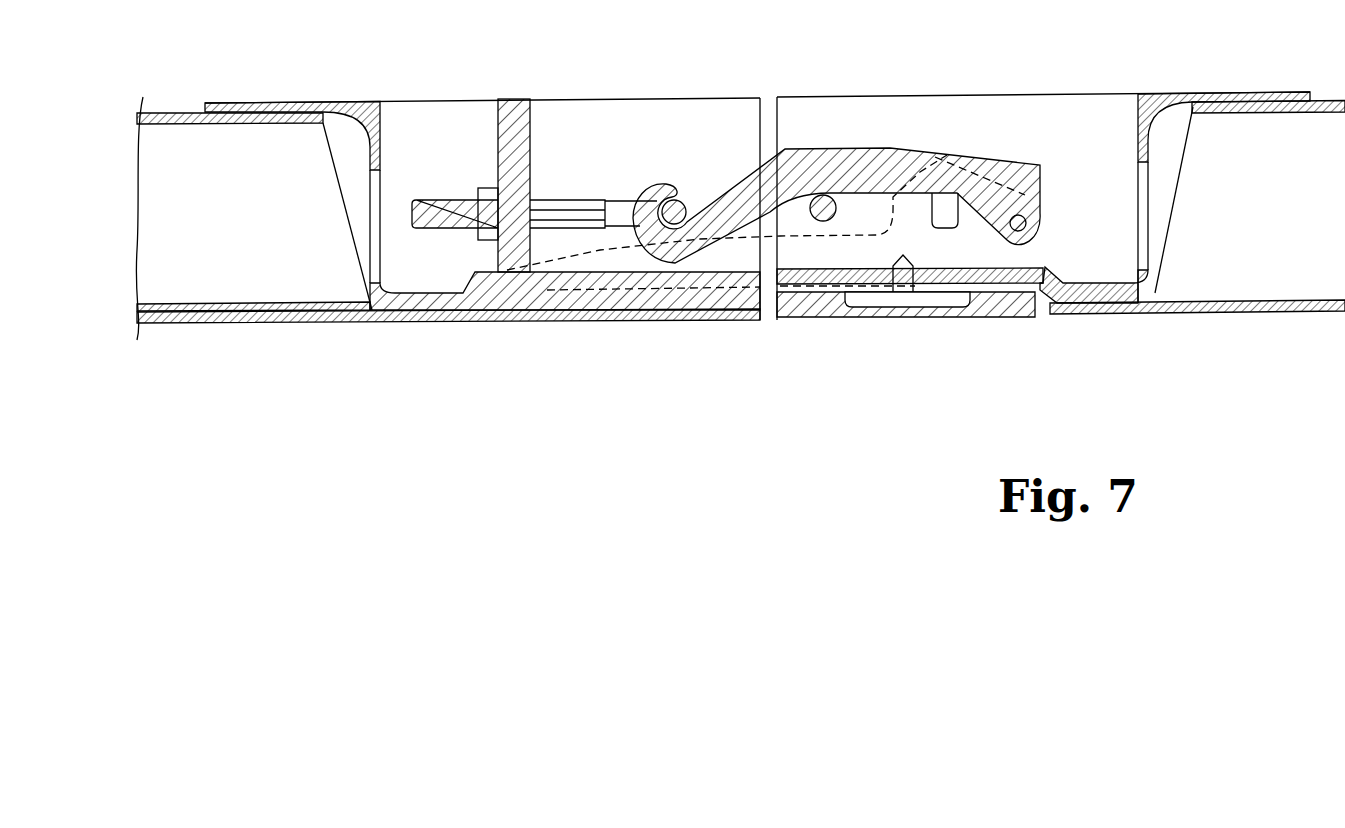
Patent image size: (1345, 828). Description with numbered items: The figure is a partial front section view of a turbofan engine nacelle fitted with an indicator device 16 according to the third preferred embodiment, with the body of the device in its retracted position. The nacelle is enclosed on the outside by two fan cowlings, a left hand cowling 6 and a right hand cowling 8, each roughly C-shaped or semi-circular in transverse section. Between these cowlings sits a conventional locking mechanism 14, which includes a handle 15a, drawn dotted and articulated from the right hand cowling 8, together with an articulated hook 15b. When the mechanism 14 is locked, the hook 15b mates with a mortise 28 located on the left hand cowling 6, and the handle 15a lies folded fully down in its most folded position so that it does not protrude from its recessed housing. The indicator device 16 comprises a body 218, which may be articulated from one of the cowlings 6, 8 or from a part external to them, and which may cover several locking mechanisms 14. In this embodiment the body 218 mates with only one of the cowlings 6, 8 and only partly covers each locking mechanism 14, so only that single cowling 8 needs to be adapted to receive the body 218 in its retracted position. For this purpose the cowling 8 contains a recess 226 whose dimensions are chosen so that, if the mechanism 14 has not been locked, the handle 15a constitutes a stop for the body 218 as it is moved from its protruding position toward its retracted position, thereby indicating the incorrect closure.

The left hand cowling 6 is at (189, 150).
The right hand cowling 8 is at (1279, 172).
The locking mechanism 14 is at (710, 150).
The indicator device 16 is at (985, 345).
The handle 15a is at (857, 250).
The hook 15b is at (893, 165).
The mortise 28 is at (686, 196).
The body 218 is at (918, 318).
The recess 226 is at (1043, 318).